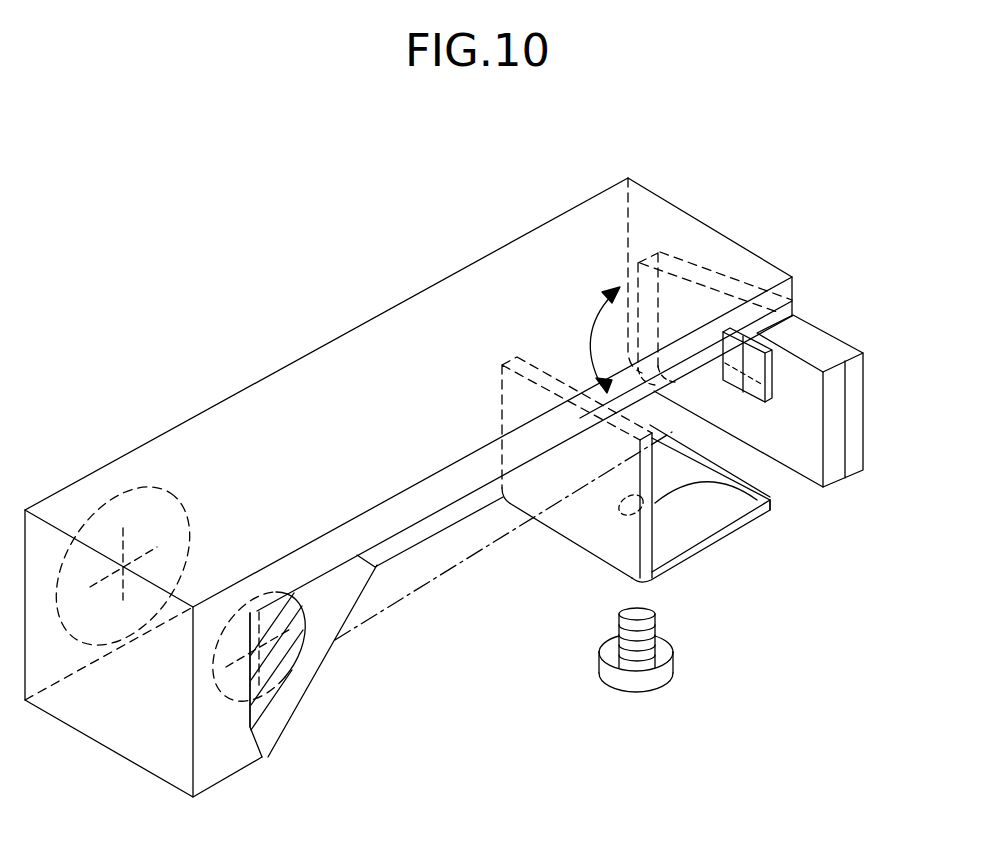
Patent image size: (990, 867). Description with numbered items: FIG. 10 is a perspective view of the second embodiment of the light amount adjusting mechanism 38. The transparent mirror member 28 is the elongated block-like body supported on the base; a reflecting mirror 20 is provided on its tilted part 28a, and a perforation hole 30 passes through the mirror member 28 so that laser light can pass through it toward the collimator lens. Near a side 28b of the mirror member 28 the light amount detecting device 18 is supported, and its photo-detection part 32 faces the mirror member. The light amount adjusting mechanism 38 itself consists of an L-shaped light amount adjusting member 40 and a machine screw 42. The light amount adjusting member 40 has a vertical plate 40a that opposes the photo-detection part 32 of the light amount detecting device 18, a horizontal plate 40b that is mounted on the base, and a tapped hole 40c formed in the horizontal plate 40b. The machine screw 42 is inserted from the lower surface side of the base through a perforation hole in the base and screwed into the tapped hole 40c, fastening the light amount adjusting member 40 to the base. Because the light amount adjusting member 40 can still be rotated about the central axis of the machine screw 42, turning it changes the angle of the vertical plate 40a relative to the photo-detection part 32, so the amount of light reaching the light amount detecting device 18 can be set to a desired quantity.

The light amount detecting device 18 is at (857, 399).
The reflecting mirror 20 is at (300, 713).
The transparent mirror member 28 is at (432, 274).
The tilted part 28a is at (353, 592).
The side 28b is at (673, 206).
The perforation hole 30 is at (153, 668).
The photo-detection part 32 is at (772, 378).
The light amount adjusting mechanism 38 is at (130, 199).
The light amount adjusting member 40 is at (717, 498).
The vertical plate 40a is at (590, 553).
The horizontal plate 40b is at (738, 538).
The tapped hole 40c is at (774, 510).
The machine screw 42 is at (630, 692).